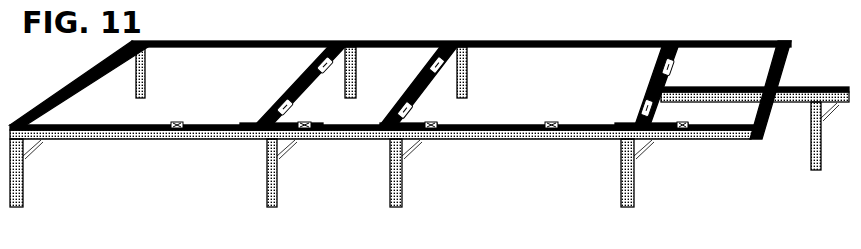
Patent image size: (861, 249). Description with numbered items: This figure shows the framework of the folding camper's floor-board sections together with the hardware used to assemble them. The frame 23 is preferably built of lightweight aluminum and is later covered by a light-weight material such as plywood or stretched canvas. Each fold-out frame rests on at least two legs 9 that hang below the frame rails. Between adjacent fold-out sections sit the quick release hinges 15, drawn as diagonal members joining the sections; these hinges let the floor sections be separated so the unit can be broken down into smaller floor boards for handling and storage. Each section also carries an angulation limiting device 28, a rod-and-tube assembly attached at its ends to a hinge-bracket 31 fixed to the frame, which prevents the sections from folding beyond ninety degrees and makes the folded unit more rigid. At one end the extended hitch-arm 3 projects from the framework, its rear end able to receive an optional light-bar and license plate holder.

The extended hitch-arm 3 is at (833, 87).
The legs 9 is at (22, 183).
The quick release hinges 15 is at (308, 59).
The frame 23 is at (105, 139).
The angulation limiting device 28 is at (250, 130).
The hinge-bracket 31 is at (172, 130).